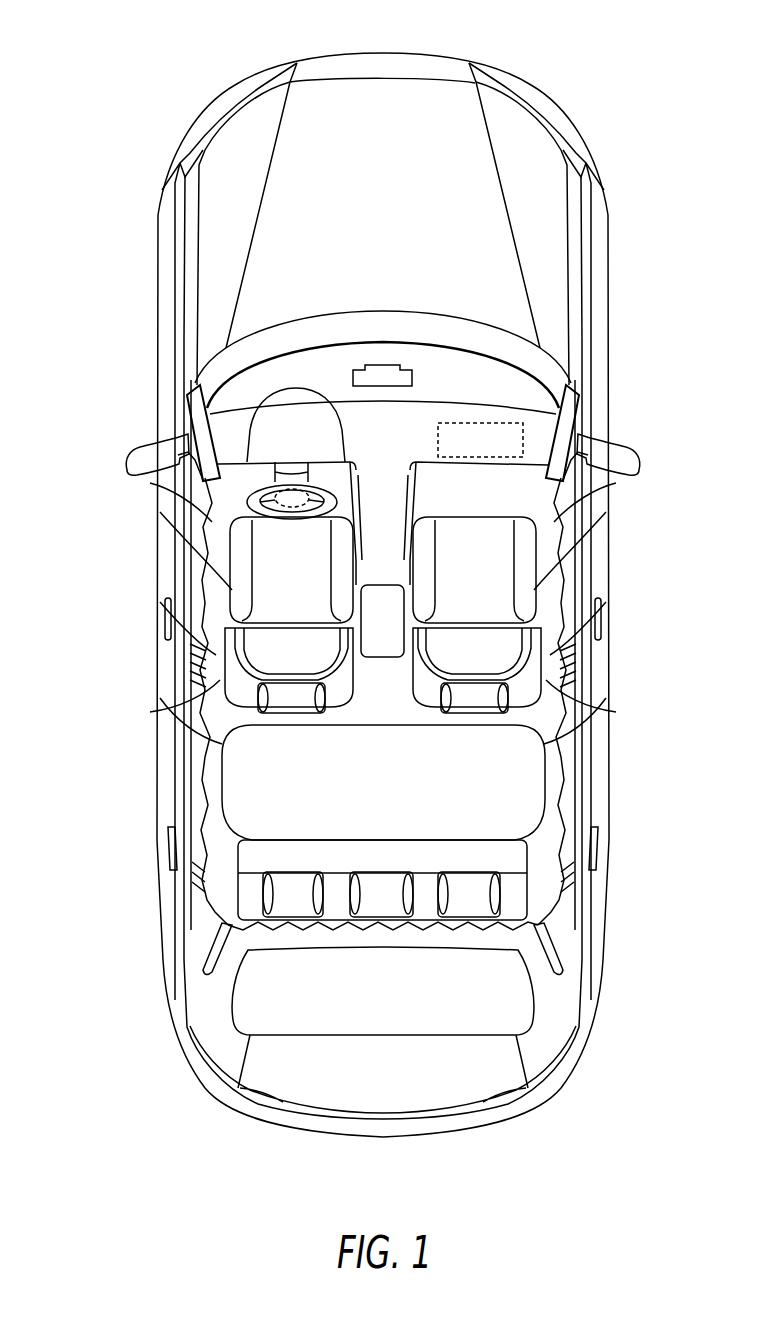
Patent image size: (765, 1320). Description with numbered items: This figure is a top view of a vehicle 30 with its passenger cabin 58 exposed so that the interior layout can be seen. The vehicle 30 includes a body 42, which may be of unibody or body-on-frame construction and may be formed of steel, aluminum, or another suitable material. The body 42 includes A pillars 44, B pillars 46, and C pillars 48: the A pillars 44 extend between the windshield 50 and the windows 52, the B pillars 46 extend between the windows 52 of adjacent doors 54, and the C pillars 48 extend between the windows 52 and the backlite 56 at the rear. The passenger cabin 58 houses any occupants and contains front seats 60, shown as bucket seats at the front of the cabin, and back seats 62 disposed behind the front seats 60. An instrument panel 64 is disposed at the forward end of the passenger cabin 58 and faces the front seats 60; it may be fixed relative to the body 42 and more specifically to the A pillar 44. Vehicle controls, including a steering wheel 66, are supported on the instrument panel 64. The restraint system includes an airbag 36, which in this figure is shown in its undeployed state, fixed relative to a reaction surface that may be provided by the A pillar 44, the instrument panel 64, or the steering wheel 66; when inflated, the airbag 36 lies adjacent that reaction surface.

The vehicle 30 is at (108, 66).
The airbag 36 is at (290, 490).
The body 42 is at (604, 962).
The A pillars 44 is at (128, 475).
The B pillars 46 is at (193, 695).
The C pillars 48 is at (197, 891).
The windshield 50 is at (545, 347).
The windows 52 is at (200, 590).
The doors 54 is at (606, 568).
The backlite 56 is at (435, 1037).
The passenger cabin 58 is at (222, 732).
The front seats 60 is at (388, 572).
The back seats 62 is at (196, 825).
The instrument panel 64 is at (576, 535).
The steering wheel 66 is at (250, 508).